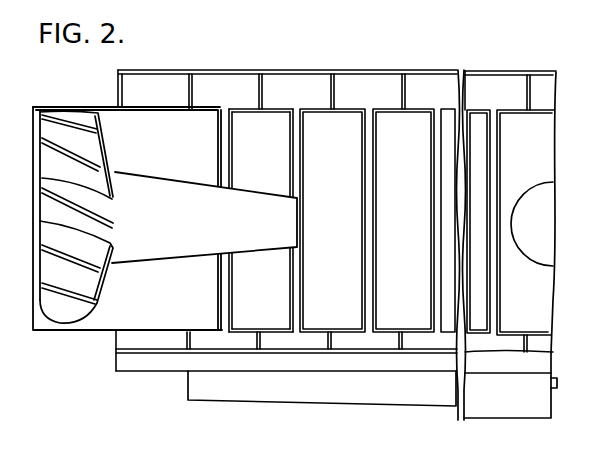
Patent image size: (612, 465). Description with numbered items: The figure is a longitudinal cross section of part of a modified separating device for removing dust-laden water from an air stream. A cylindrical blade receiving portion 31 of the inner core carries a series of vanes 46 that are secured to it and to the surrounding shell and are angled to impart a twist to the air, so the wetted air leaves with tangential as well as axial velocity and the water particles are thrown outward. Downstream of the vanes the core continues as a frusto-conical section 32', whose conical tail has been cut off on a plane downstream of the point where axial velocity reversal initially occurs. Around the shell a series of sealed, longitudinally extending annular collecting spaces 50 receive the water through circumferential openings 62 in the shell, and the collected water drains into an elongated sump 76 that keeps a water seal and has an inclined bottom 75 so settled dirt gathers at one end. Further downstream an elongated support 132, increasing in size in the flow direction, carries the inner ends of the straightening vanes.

The cylindrical blade receiving portion 31 is at (38, 208).
The vanes 46 is at (88, 170).
The frusto-conical section 32' is at (204, 206).
The annular collecting spaces 50 is at (284, 82).
The circumferential openings 62 is at (293, 130).
The elongated support 132 is at (533, 259).
The sump 76 is at (287, 392).
The inclined bottom 75 is at (422, 409).